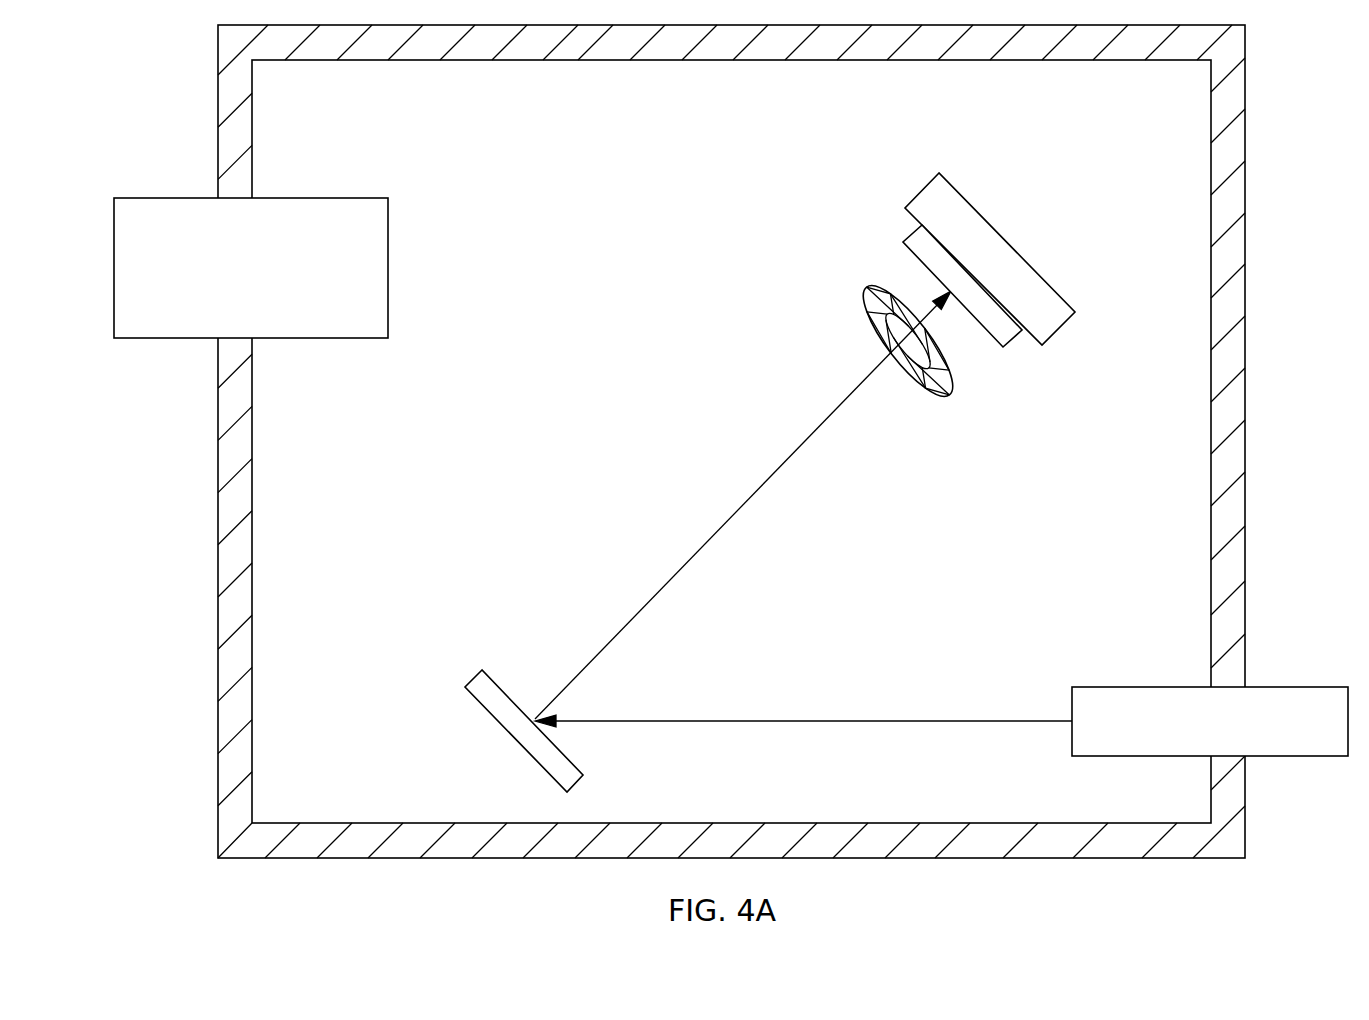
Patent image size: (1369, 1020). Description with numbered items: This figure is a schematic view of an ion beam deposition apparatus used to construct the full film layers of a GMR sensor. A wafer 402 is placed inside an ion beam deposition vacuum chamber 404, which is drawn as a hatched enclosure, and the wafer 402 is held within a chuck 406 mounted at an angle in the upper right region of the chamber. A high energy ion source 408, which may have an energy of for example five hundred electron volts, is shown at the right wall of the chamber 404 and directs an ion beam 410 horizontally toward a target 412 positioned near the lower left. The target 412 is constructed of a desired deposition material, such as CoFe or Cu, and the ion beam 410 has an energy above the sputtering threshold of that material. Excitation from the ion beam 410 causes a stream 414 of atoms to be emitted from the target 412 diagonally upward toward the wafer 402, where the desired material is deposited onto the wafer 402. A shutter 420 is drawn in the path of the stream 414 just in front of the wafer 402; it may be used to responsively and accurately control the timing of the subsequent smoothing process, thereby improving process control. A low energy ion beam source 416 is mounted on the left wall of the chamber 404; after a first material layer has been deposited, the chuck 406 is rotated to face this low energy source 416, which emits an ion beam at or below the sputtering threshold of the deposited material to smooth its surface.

The wafer 402 is at (908, 232).
The ion beam deposition vacuum chamber 404 is at (1246, 287).
The chuck 406 is at (987, 222).
The high energy ion source 408 is at (1163, 687).
The ion beam 410 is at (933, 721).
The target 412 is at (502, 725).
The stream of atoms 414 is at (777, 471).
The low energy ion beam source 416 is at (349, 198).
The shutter 420 is at (858, 306).